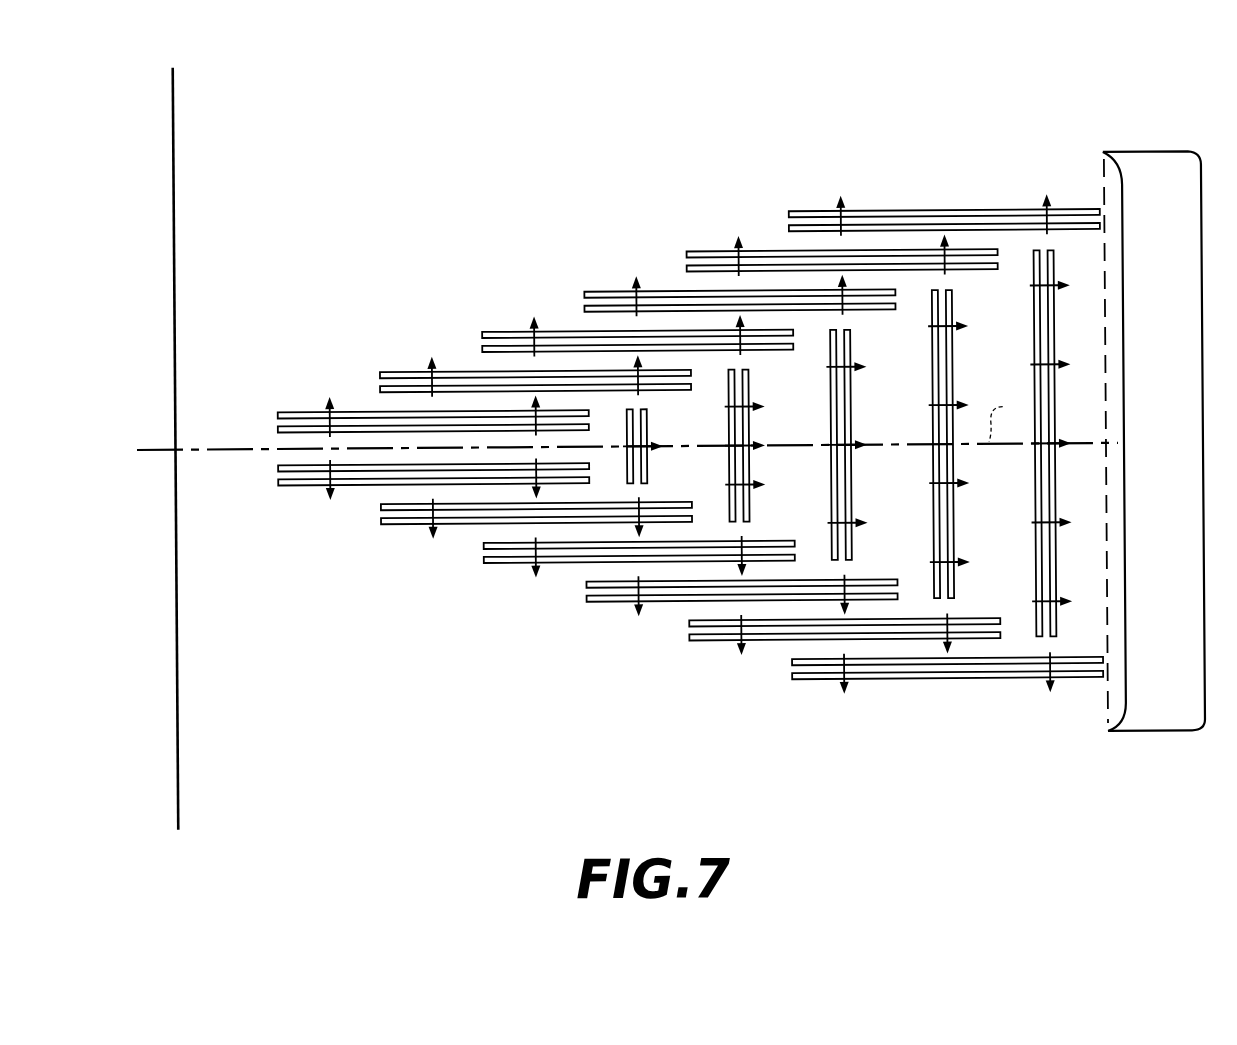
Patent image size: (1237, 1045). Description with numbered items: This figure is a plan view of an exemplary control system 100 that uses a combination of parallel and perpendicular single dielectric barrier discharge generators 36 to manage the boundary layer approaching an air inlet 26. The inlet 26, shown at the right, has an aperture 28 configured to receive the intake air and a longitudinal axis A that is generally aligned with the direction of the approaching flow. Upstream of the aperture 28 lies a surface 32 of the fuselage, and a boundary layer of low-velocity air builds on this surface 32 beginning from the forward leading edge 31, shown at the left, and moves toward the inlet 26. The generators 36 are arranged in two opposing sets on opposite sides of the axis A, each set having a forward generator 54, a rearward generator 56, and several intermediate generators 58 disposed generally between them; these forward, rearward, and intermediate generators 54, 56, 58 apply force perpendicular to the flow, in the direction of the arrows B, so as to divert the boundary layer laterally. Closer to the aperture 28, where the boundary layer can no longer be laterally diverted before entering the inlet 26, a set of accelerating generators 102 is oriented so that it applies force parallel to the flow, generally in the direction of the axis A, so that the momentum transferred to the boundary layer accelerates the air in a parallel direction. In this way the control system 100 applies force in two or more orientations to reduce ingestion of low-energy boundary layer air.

The inlet 26 is at (1165, 159).
The aperture 28 is at (1108, 338).
The leading edge 31 is at (176, 176).
The surface 32 is at (306, 252).
The single dielectric barrier discharge generator 36 is at (357, 409).
The forward generator 54 is at (295, 414).
The rearward generator 56 is at (921, 684).
The intermediate generator 58 is at (401, 526).
The control system 100 is at (451, 210).
The accelerating generator 102 is at (648, 429).